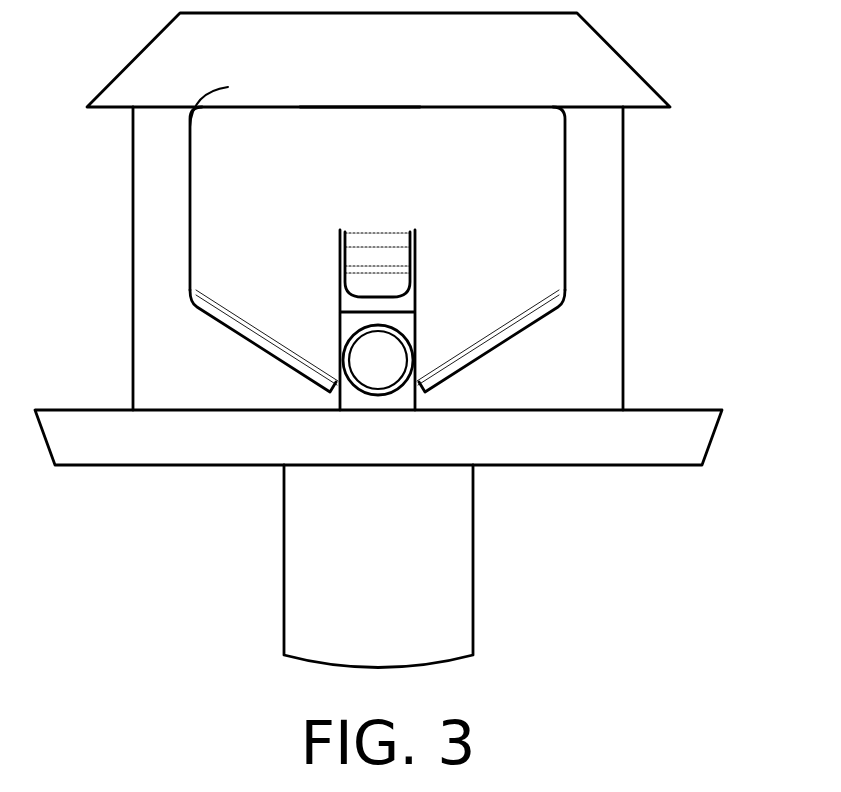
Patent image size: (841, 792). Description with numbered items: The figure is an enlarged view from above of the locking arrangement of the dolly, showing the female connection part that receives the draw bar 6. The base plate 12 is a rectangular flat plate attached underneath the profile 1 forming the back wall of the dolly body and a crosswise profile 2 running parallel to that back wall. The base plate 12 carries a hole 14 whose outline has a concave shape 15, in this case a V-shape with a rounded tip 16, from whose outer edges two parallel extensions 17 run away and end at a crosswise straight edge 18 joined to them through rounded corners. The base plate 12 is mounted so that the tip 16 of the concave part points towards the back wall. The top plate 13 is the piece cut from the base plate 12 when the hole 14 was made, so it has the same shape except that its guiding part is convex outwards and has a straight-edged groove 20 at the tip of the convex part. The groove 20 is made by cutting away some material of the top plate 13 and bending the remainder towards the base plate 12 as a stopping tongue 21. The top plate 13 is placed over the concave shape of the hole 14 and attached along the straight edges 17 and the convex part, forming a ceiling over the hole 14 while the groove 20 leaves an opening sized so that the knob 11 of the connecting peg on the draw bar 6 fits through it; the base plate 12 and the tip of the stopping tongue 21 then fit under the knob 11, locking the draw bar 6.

The profile forming the back wall 1 is at (682, 417).
The crosswise profile 2 is at (600, 58).
The draw bar 6 is at (460, 553).
The knob 11 is at (378, 362).
The base plate 12 is at (598, 193).
The top plate 13 is at (548, 243).
The hole 14 is at (192, 112).
The concave shape 15 is at (238, 312).
The rounded tip 16 is at (412, 368).
The parallel extensions 17 is at (192, 213).
The crosswise straight edge 18 is at (360, 118).
The groove 20 is at (418, 299).
The stopping tongue 21 is at (378, 255).